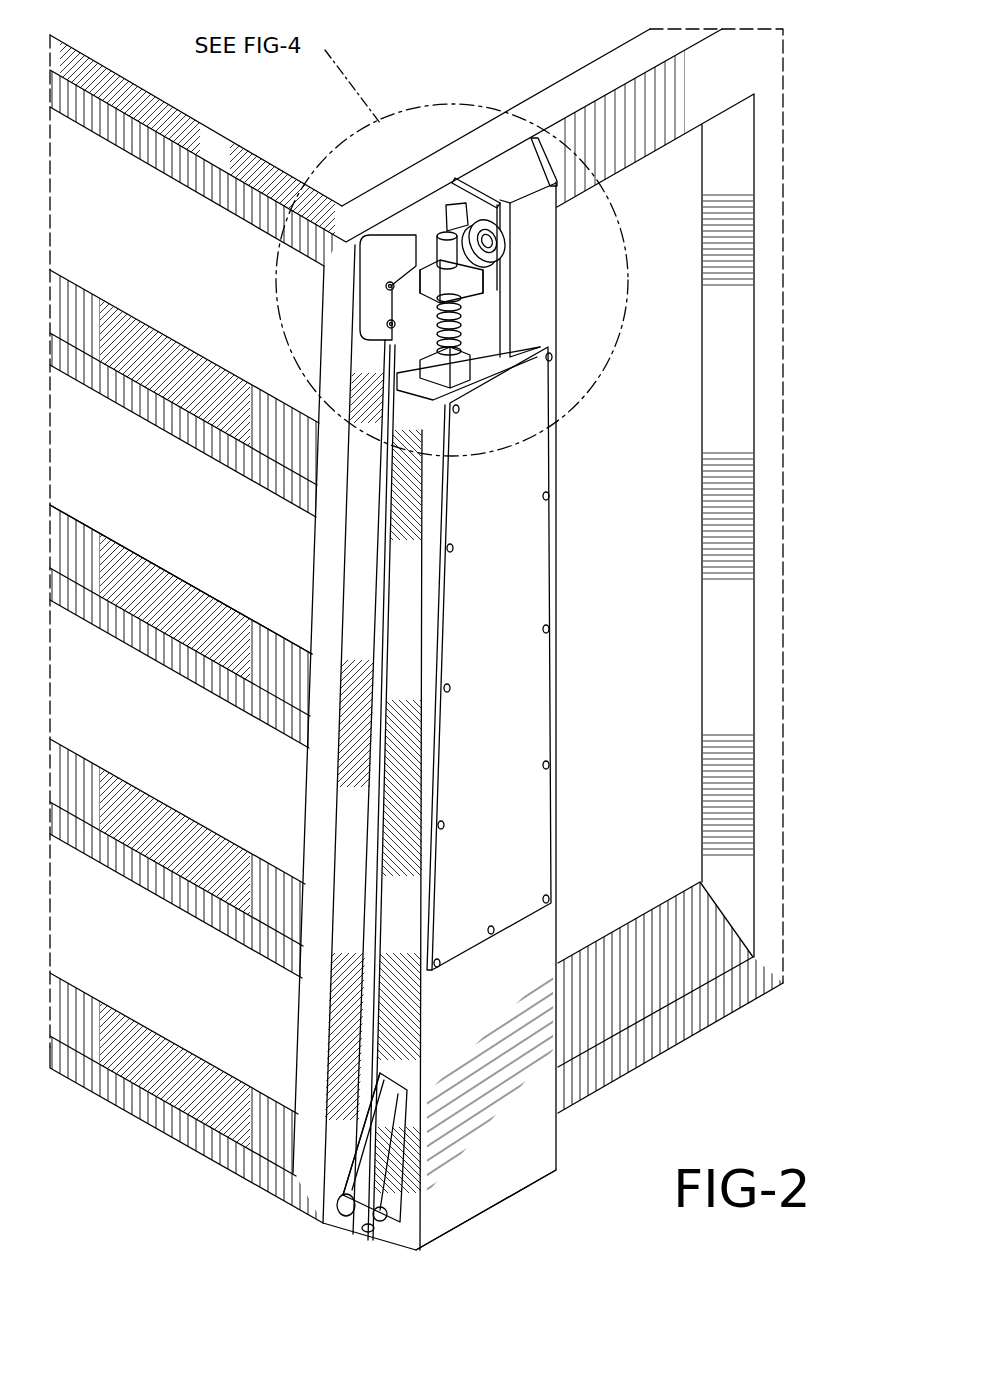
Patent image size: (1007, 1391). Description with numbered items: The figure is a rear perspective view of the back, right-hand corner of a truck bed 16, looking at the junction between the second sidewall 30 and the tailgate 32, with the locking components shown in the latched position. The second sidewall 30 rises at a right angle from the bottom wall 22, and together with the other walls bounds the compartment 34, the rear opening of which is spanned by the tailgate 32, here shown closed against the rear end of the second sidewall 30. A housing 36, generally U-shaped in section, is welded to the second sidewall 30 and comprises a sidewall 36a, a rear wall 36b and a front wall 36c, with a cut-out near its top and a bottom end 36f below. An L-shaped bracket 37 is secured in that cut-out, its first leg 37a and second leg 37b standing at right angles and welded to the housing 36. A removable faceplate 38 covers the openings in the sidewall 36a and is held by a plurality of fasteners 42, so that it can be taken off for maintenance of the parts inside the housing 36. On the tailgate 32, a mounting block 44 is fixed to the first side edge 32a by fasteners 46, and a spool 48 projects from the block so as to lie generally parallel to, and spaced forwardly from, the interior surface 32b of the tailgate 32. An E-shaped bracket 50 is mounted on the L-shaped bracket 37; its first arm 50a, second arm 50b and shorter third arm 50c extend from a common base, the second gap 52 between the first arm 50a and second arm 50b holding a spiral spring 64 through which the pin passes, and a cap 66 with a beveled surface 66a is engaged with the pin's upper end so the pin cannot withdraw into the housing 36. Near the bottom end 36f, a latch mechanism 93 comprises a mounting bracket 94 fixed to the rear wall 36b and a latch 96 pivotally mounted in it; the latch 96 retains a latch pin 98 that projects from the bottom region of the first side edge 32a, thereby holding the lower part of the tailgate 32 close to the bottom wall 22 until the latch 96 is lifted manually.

The bed 16 is at (723, 1030).
The bottom wall 22 is at (633, 1083).
The second sidewall 30 is at (668, 836).
The tailgate 32 is at (157, 1128).
The first side edge 32a is at (365, 545).
The interior surface 32b is at (100, 63).
The compartment 34 is at (247, 120).
The housing 36 is at (515, 1184).
The sidewall 36a is at (488, 1016).
The rear wall 36b is at (400, 828).
The front wall 36c is at (548, 138).
The bottom end 36f is at (474, 1219).
The L-shaped bracket 37 is at (412, 398).
The first leg 37a is at (397, 370).
The second leg 37b is at (512, 300).
The faceplate 38 is at (514, 603).
The fasteners 42 is at (453, 548).
The mounting block 44 is at (358, 267).
The fasteners 46 is at (385, 324).
The spool 48 is at (507, 226).
The E-shaped bracket 50 is at (502, 272).
The first arm 50a is at (456, 400).
The second arm 50b is at (472, 285).
The third arm 50c is at (472, 190).
The second gap 52 is at (470, 325).
The spiral spring 64 is at (470, 368).
The cap 66 is at (443, 228).
The beveled surface 66a is at (432, 240).
The latch mechanism 93 is at (336, 1232).
The mounting bracket 94 is at (390, 1187).
The latch 96 is at (345, 1178).
The latch pin 98 is at (383, 1221).